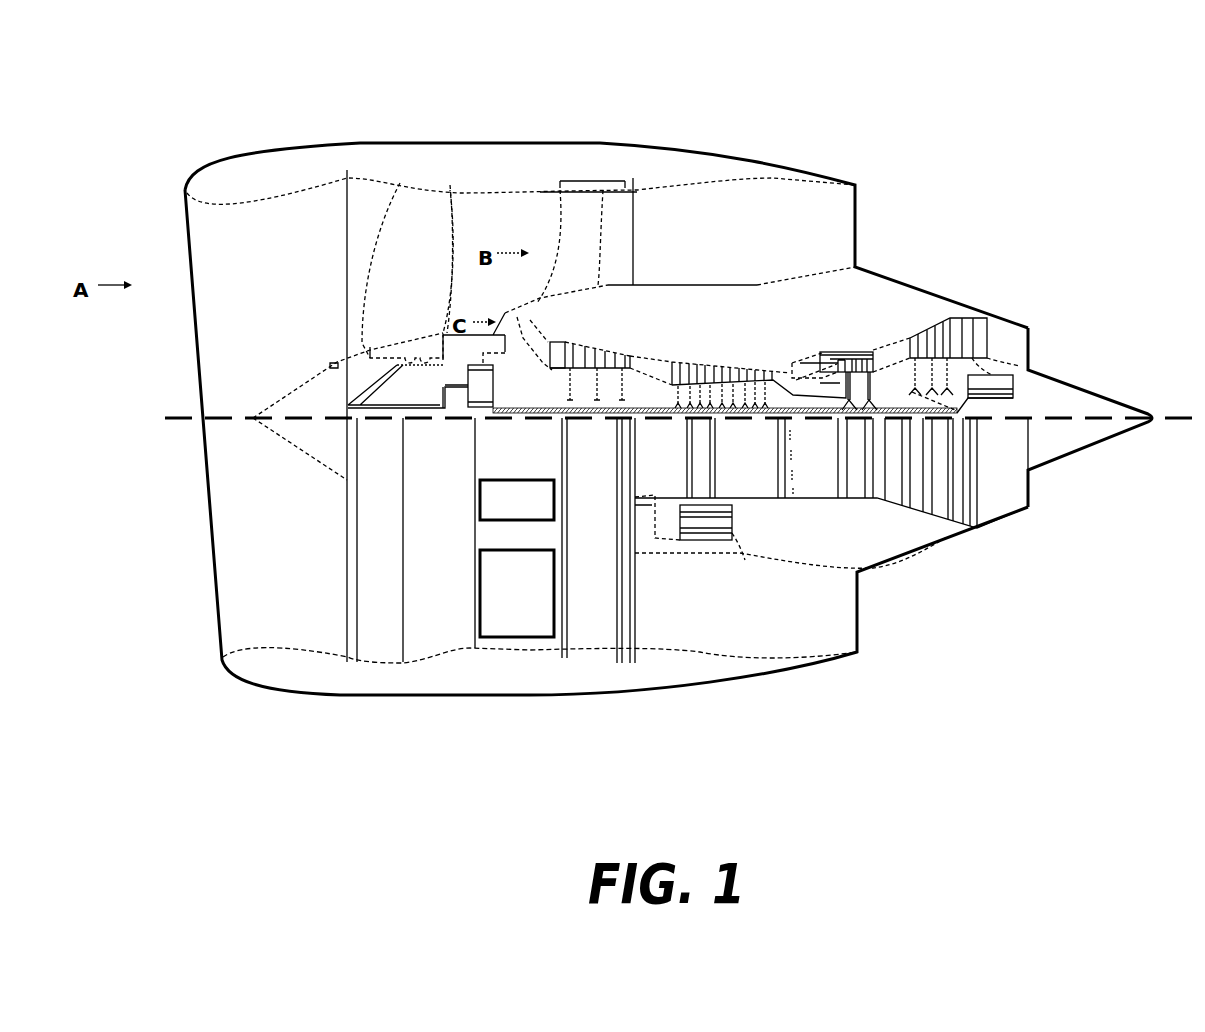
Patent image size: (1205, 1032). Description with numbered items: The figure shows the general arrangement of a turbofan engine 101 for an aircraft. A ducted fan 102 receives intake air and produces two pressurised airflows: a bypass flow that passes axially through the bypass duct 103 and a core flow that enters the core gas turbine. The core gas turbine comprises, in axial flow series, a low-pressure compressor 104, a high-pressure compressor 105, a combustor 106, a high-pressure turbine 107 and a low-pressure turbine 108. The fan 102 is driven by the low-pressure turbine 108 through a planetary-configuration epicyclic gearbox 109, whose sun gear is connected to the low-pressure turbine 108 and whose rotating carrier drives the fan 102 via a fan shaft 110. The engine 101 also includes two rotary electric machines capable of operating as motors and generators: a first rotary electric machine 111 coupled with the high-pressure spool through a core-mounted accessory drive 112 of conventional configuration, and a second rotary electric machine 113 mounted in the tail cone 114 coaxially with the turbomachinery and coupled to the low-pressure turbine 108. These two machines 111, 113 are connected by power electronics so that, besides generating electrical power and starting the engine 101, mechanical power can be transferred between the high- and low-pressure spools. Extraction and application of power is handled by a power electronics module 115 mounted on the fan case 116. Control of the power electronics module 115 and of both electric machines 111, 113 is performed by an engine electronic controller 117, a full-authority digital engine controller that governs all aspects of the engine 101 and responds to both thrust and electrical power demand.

The engine 101 is at (257, 76).
The ducted fan 102 is at (430, 304).
The bypass duct 103 is at (529, 229).
The low-pressure compressor 104 is at (598, 334).
The high-pressure compressor 105 is at (720, 350).
The combustor 106 is at (808, 345).
The high-pressure turbine 107 is at (856, 338).
The low-pressure turbine 108 is at (941, 306).
The epicyclic gearbox 109 is at (513, 393).
The fan shaft 110 is at (409, 410).
The first rotary electric machine 111 is at (745, 560).
The core-mounted accessory drive 112 is at (655, 506).
The second rotary electric machine 113 is at (1020, 366).
The tail cone 114 is at (1093, 392).
The power electronics module 115 is at (478, 587).
The fan case 116 is at (363, 567).
The engine electronic controller 117 is at (478, 503).